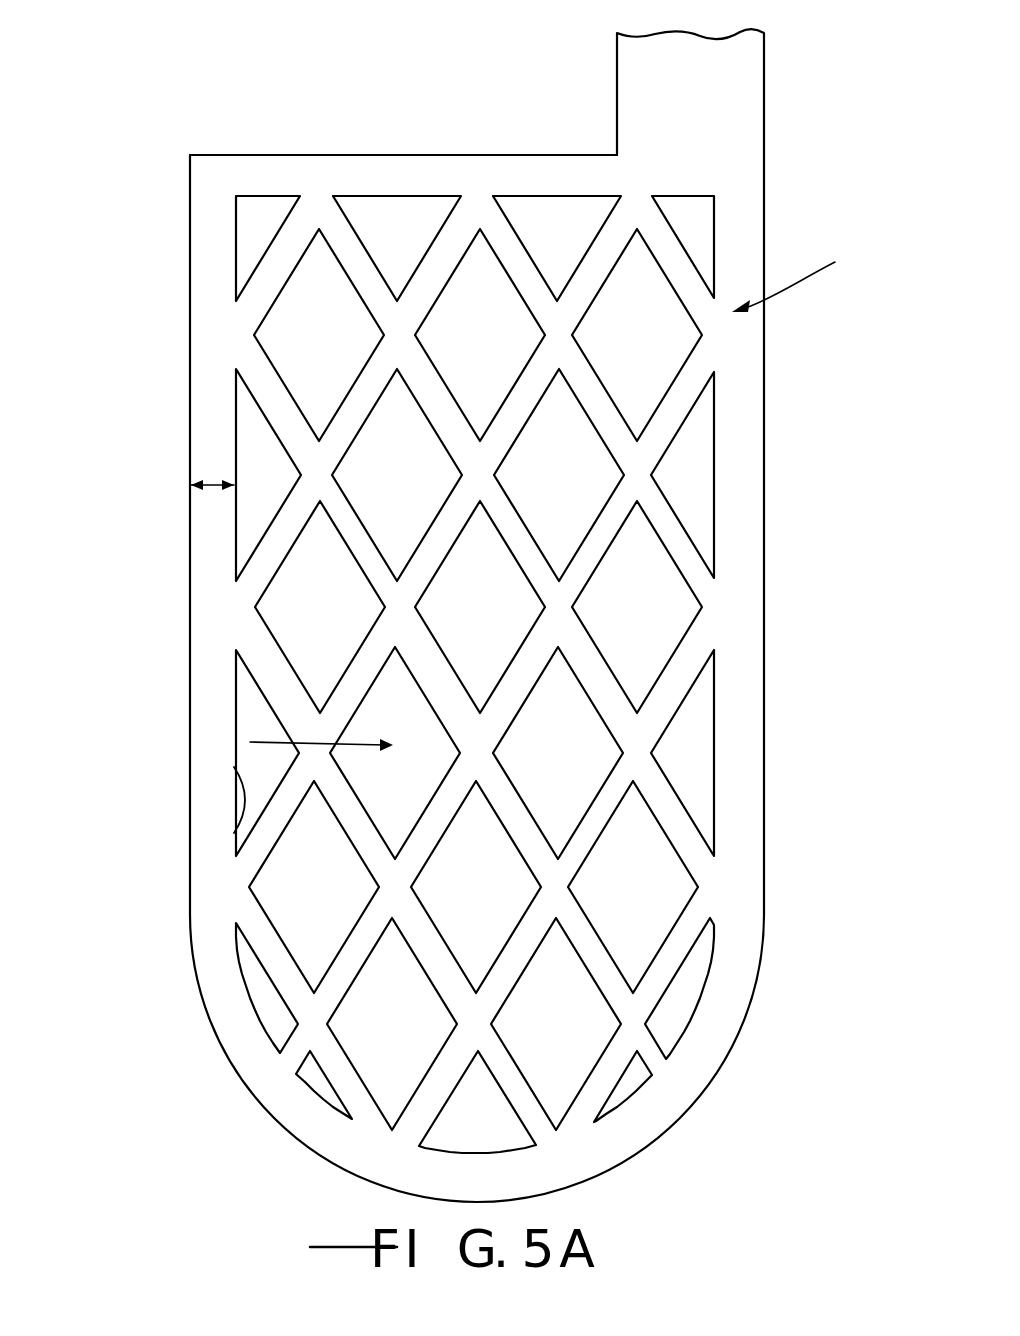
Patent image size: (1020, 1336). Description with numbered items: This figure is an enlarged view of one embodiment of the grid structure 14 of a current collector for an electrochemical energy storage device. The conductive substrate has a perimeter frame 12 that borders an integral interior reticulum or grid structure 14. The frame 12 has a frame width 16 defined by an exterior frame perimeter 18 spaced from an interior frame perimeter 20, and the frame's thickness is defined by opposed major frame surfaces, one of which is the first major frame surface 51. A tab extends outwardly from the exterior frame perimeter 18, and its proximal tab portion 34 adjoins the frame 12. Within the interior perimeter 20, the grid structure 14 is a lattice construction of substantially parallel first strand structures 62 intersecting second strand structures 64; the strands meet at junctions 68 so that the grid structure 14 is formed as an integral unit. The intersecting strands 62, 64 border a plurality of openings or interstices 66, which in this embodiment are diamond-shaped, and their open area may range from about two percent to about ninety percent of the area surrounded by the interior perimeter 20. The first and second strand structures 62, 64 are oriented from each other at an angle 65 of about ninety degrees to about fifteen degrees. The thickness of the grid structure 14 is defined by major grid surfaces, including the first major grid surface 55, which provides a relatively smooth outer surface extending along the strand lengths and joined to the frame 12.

The perimeter frame 12 is at (735, 438).
The grid structure 14 is at (593, 555).
The frame width 16 is at (210, 488).
The exterior frame perimeter 18 is at (393, 155).
The interior frame perimeter 20 is at (520, 198).
The proximal tab portion 34 is at (756, 88).
The first major frame surface 51 is at (802, 271).
The first major grid surface 55 is at (250, 742).
The first strand structures 62 is at (611, 245).
The second strand structures 64 is at (682, 829).
The angle 65 is at (595, 1045).
The openings 66 is at (297, 613).
The junctions 68 is at (393, 318).